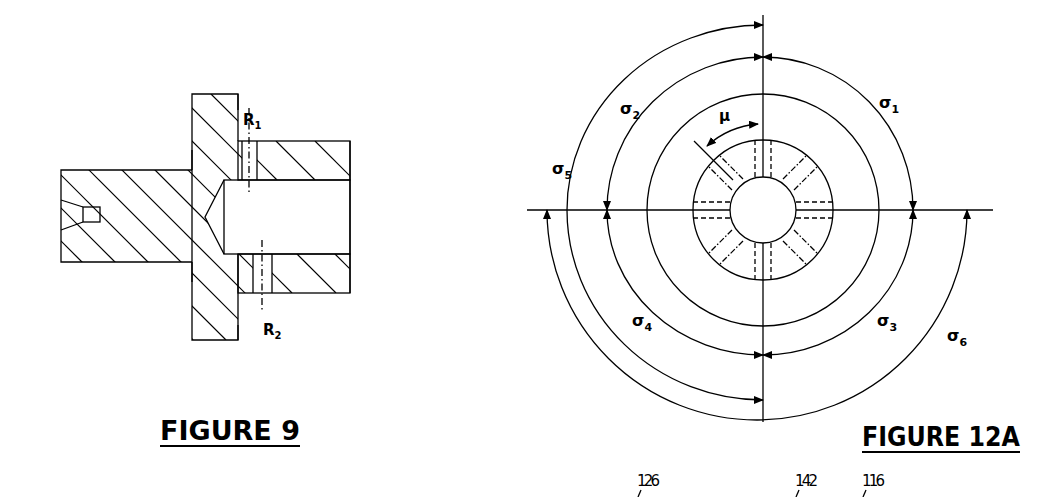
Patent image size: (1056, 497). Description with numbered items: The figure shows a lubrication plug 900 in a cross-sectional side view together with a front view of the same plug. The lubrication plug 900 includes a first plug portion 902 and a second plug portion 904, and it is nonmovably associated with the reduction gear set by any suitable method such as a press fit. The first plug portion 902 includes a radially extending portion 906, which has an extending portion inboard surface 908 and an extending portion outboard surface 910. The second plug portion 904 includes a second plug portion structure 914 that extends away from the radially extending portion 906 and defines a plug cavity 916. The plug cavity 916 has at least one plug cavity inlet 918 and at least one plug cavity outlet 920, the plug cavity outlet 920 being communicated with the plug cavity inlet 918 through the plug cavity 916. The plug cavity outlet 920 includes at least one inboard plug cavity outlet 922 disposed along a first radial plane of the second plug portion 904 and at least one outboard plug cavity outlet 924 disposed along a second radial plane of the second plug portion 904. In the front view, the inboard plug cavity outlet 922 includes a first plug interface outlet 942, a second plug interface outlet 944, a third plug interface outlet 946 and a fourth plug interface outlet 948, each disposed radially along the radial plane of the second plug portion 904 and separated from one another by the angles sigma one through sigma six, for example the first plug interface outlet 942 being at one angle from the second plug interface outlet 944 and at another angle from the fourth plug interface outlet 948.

In FIG. 9, the lubrication plug 900 is at (401, 64).
In FIG. 12A, the lubrication plug 900 is at (964, 67).
In FIG. 9, the first plug portion 902 is at (126, 242).
In FIG. 9, the second plug portion 904 is at (315, 294).
In FIG. 9, the radially extending portion 906 is at (215, 218).
In FIG. 9, the extending portion inboard surface 908 is at (157, 217).
In FIG. 9, the extending portion outboard surface 910 is at (272, 223).
In FIG. 9, the second plug portion structure 914 is at (302, 145).
In FIG. 9, the plug cavity 916 is at (331, 207).
In FIG. 12A, the plug cavity 916 is at (776, 220).
In FIG. 9, the plug cavity inlet 918 is at (375, 217).
In FIG. 9, the plug cavity outlet 920 is at (286, 221).
In FIG. 9, the inboard plug cavity outlet 922 is at (253, 186).
In FIG. 12A, the inboard plug cavity outlet 922 is at (813, 206).
In FIG. 9, the outboard plug cavity outlet 924 is at (274, 255).
In FIG. 12A, the outboard plug cavity outlet 924 is at (700, 210).
In FIG. 12A, the first plug interface outlet 942 is at (781, 142).
In FIG. 12A, the second plug interface outlet 944 is at (834, 223).
In FIG. 12A, the third plug interface outlet 946 is at (779, 277).
In FIG. 12A, the fourth plug interface outlet 948 is at (694, 231).